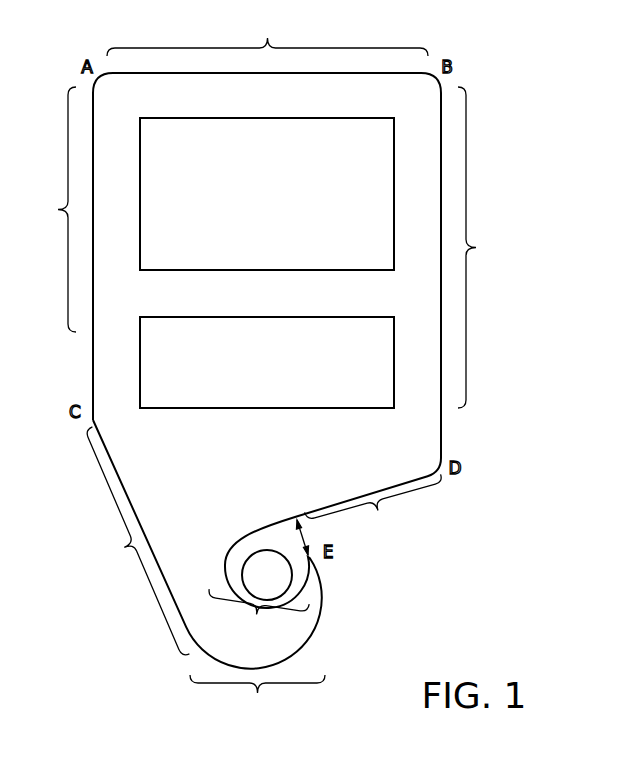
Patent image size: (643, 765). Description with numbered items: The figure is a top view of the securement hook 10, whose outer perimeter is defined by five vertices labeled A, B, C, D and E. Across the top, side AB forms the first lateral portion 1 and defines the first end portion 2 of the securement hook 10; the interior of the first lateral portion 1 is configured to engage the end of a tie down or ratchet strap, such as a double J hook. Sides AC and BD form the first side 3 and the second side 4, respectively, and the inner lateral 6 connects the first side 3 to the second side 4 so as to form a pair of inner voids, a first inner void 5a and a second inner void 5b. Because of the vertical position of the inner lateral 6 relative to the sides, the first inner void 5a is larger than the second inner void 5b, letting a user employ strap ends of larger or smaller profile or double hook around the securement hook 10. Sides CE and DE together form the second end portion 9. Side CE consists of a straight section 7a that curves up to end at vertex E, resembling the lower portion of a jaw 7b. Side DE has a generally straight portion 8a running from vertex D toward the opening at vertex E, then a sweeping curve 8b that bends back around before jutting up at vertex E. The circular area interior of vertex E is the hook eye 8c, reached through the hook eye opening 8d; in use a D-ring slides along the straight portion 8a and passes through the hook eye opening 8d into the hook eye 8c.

The first lateral portion 1 is at (309, 104).
The first end portion 2 is at (267, 37).
The first side 3 is at (60, 209).
The second side 4 is at (473, 247).
The first inner void 5a is at (257, 206).
The second inner void 5b is at (255, 372).
The inner lateral 6 is at (307, 301).
The straight section of side CE 7a is at (138, 541).
The lower portion of a jaw 7b is at (257, 696).
The generally straight portion of side DE 8a is at (373, 506).
The sweeping curve 8b is at (259, 615).
The hook eye 8c is at (257, 584).
The hook eye opening 8d is at (301, 535).
The second end portion 9 is at (201, 486).
The securement hook 10 is at (340, 371).